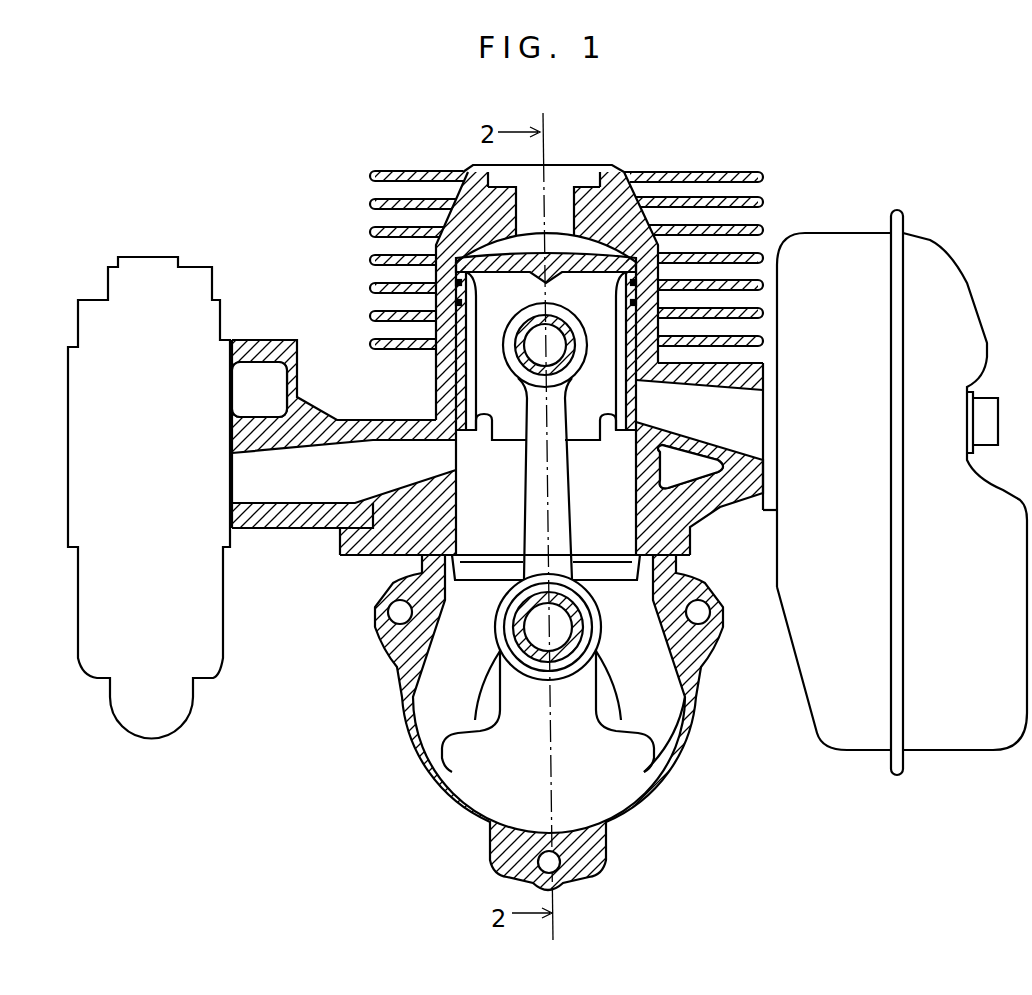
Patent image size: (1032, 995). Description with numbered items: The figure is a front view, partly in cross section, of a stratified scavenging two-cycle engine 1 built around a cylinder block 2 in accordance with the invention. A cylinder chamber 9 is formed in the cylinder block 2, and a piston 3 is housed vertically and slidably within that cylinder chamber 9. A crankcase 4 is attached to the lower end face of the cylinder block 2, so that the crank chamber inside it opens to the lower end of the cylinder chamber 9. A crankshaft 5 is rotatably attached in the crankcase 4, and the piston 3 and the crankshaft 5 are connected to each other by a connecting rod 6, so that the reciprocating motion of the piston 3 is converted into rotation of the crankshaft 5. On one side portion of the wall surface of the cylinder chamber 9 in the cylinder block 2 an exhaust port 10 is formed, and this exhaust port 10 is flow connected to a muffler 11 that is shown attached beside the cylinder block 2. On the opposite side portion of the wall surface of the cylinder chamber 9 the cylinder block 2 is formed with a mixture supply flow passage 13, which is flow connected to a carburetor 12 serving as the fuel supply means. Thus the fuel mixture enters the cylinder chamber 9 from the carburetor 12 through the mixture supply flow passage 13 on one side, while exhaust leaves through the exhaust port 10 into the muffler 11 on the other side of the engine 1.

The stratified scavenging two-cycle engine 1 is at (340, 152).
The cylinder block 2 is at (442, 383).
The piston 3 is at (436, 250).
The crankcase 4 is at (410, 738).
The crankshaft 5 is at (600, 690).
The connecting rod 6 is at (698, 680).
The cylinder chamber 9 is at (502, 521).
The exhaust port 10 is at (742, 303).
The muffler 11 is at (930, 240).
The carburetor 12 is at (193, 698).
The mixture supply flow passage 13 is at (343, 547).